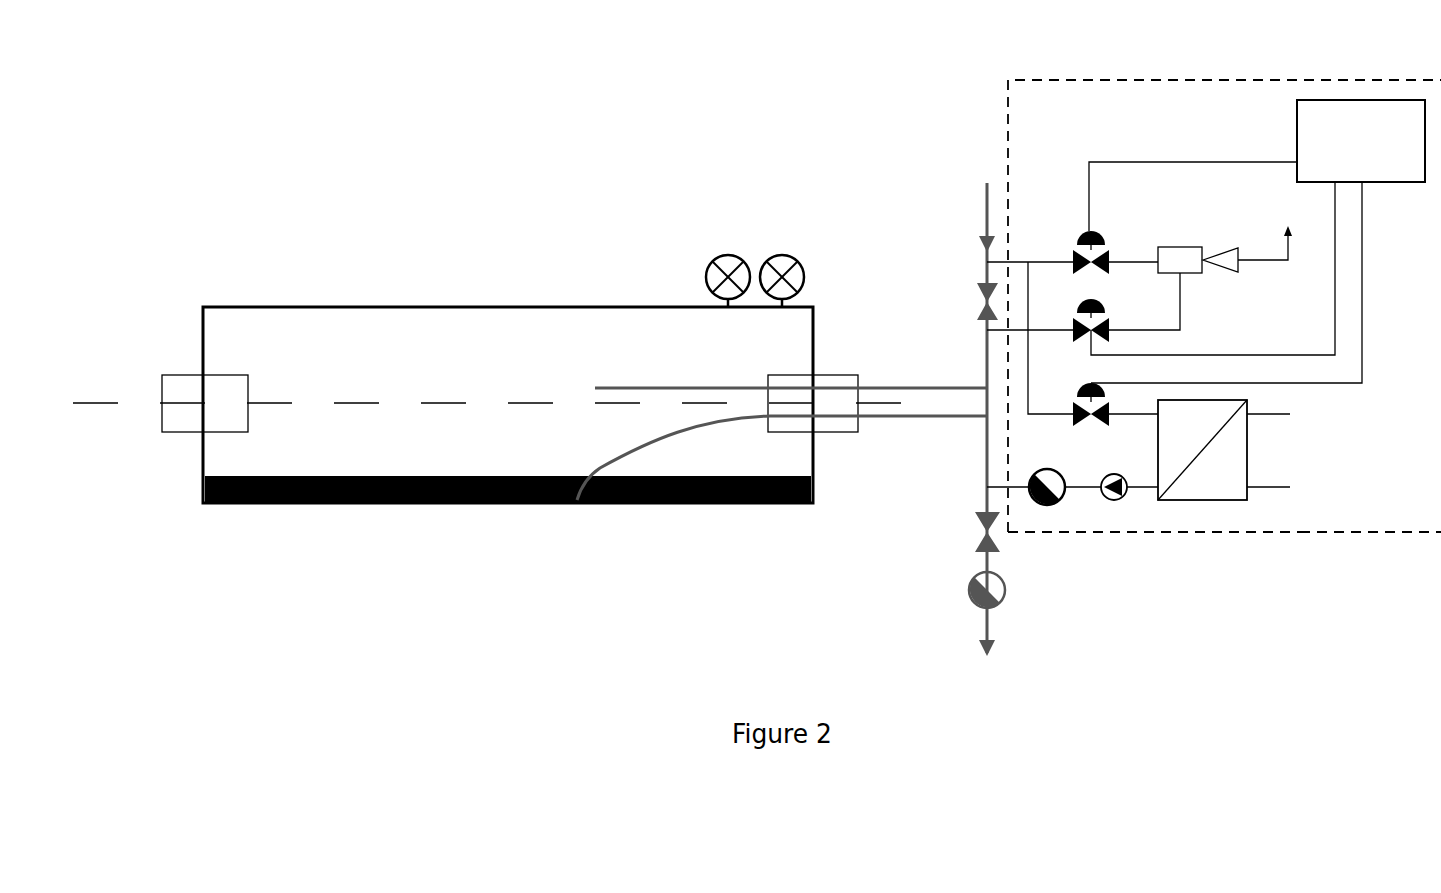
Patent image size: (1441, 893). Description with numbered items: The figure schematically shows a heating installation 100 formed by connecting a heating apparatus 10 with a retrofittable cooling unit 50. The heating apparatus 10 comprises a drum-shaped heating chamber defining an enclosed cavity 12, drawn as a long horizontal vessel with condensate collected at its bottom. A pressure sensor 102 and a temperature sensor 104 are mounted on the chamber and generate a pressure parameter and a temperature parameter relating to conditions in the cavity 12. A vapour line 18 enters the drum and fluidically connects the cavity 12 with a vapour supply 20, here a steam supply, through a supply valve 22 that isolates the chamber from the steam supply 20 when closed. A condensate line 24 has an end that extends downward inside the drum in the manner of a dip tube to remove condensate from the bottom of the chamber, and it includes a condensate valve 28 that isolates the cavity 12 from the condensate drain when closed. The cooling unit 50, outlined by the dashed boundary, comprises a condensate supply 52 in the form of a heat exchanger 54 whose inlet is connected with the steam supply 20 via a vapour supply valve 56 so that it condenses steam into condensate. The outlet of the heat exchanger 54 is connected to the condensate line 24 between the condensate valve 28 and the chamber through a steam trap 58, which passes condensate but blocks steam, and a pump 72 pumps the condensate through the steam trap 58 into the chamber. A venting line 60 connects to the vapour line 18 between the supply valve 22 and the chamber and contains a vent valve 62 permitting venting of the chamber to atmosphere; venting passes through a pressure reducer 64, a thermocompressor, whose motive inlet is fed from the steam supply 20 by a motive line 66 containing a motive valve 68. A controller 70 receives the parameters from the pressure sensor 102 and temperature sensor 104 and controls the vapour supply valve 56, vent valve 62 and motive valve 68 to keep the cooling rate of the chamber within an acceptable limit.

The heating installation 100 is at (244, 177).
The heating apparatus 10 is at (423, 290).
The enclosed cavity 12 is at (577, 327).
The temperature sensor 104 is at (720, 257).
The pressure sensor 102 is at (797, 252).
The vapour line 18 is at (930, 385).
The condensate line 24 is at (930, 420).
The vapour supply 20 is at (980, 188).
The supply valve 22 is at (985, 296).
The condensate valve 28 is at (978, 527).
The cooling unit 50 is at (1353, 542).
The condensate supply 52 is at (1212, 523).
The motive line 66 is at (1047, 258).
The motive valve 68 is at (1083, 237).
The vent valve 62 is at (1083, 334).
The vapour supply valve 56 is at (1098, 424).
The pressure reducer 64 is at (1173, 250).
The venting line 60 is at (1180, 306).
The controller 70 is at (1380, 184).
The heat exchanger 54 is at (1238, 452).
The steam trap 58 is at (1050, 505).
The pump 72 is at (1112, 500).